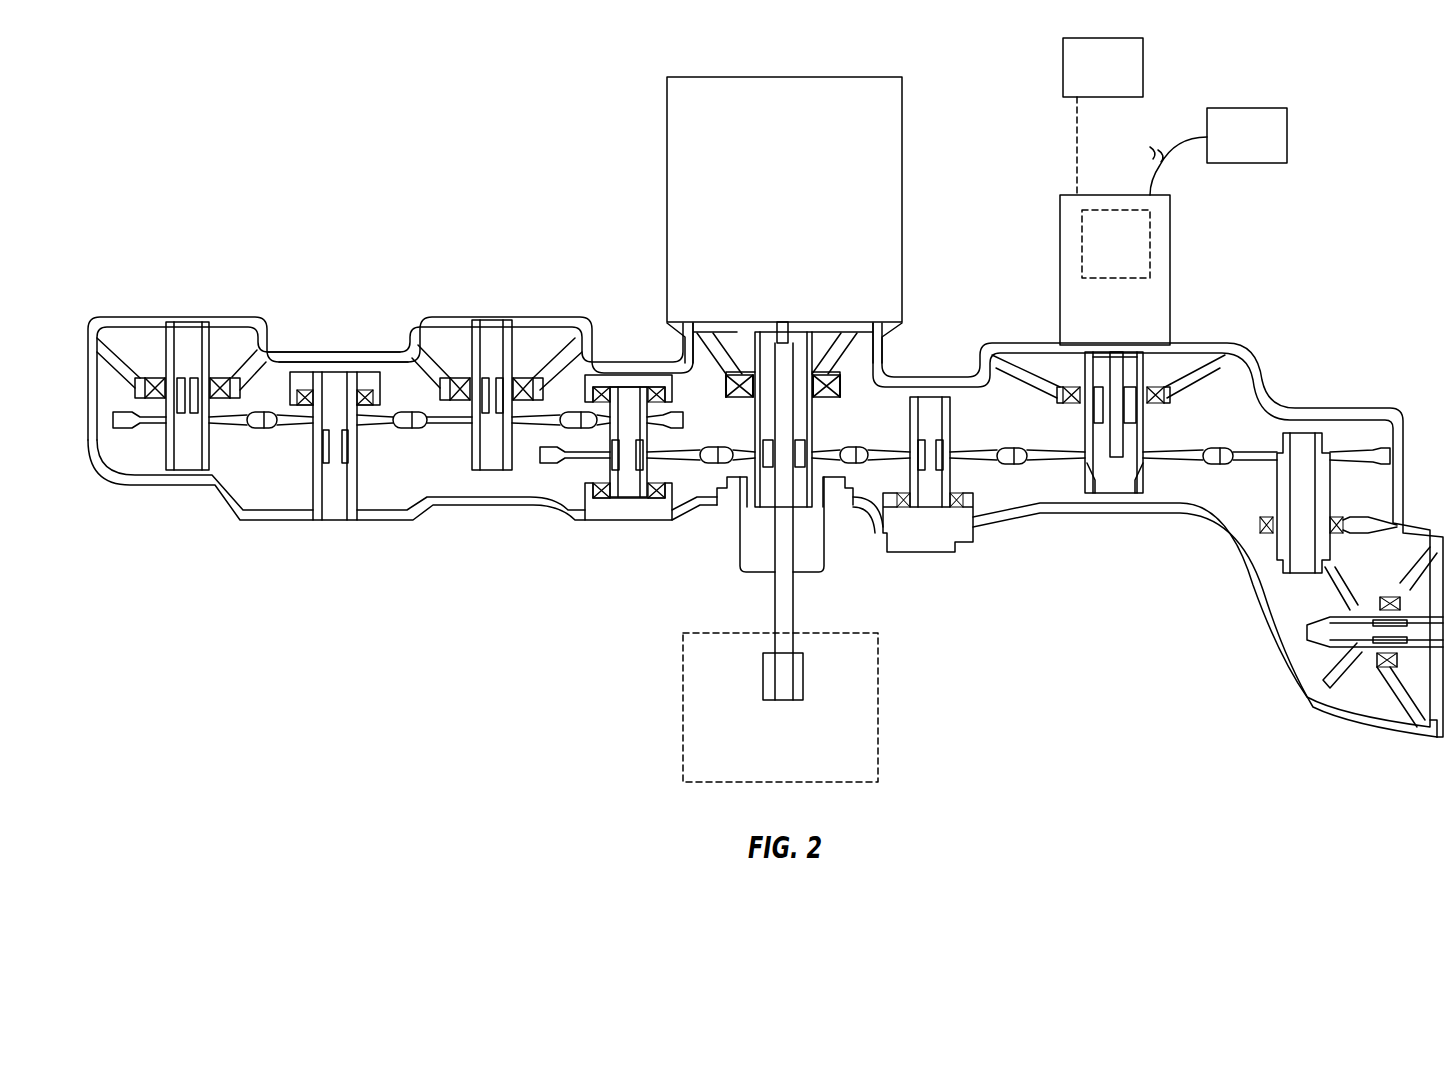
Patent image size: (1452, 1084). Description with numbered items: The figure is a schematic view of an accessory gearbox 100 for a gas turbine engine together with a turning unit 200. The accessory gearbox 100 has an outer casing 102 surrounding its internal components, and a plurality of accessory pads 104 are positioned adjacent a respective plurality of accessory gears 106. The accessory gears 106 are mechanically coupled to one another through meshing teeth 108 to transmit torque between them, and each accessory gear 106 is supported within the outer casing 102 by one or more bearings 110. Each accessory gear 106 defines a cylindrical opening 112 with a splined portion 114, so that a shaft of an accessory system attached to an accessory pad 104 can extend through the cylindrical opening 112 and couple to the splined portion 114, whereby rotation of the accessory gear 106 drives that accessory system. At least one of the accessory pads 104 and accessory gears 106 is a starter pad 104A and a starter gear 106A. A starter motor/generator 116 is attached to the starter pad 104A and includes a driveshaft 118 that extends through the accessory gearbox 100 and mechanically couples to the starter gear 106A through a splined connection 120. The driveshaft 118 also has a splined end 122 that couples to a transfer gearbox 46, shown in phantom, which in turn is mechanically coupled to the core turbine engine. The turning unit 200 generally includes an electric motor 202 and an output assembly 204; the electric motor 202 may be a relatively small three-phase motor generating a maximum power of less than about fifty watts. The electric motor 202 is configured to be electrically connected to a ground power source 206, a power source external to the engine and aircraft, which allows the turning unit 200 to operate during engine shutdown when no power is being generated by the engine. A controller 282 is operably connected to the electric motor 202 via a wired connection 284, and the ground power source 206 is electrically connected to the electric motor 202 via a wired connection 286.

The accessory gearbox 100 is at (503, 95).
The outer casing 102 is at (382, 333).
The accessory pads 104 is at (283, 520).
The starter pad 104A is at (847, 323).
The accessory gears 106 is at (368, 455).
The starter gear 106A is at (743, 362).
The meshing teeth 108 is at (415, 437).
The bearings 110 is at (307, 387).
The cylindrical opening 112 is at (335, 502).
The splined portion 114 is at (328, 423).
The starter motor/generator 116 is at (778, 75).
The driveshaft 118 is at (790, 540).
The splined connection 120 is at (770, 473).
The splined end 122 is at (807, 668).
The transfer gearbox 46 is at (880, 687).
The turning unit 200 is at (1190, 287).
The electric motor 202 is at (1150, 222).
The output assembly 204 is at (1127, 365).
The ground power source 206 is at (1231, 151).
The controller 282 is at (1087, 84).
The wired connection 284 is at (1077, 140).
The wired connection 286 is at (1163, 143).